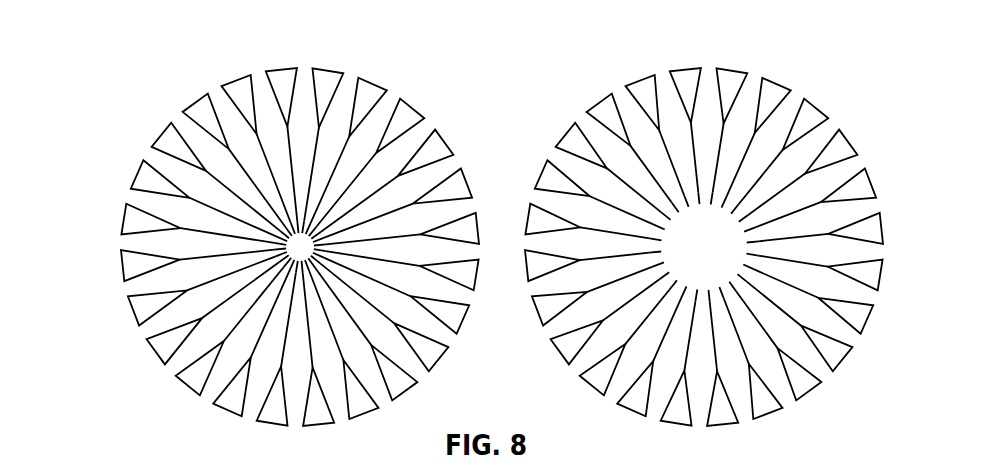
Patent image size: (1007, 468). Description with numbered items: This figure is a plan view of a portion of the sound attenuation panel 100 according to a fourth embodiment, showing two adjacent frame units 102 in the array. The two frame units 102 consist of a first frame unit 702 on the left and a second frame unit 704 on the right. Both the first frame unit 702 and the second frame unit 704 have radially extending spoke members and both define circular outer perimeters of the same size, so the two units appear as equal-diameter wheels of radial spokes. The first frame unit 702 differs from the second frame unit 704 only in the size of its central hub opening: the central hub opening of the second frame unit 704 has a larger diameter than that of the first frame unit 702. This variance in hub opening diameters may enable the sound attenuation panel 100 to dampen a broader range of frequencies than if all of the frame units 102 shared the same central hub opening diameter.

The sound attenuation panel 100 is at (279, 28).
The frame unit 102 is at (115, 165).
The first frame unit 702 is at (157, 113).
The second frame unit 704 is at (829, 79).